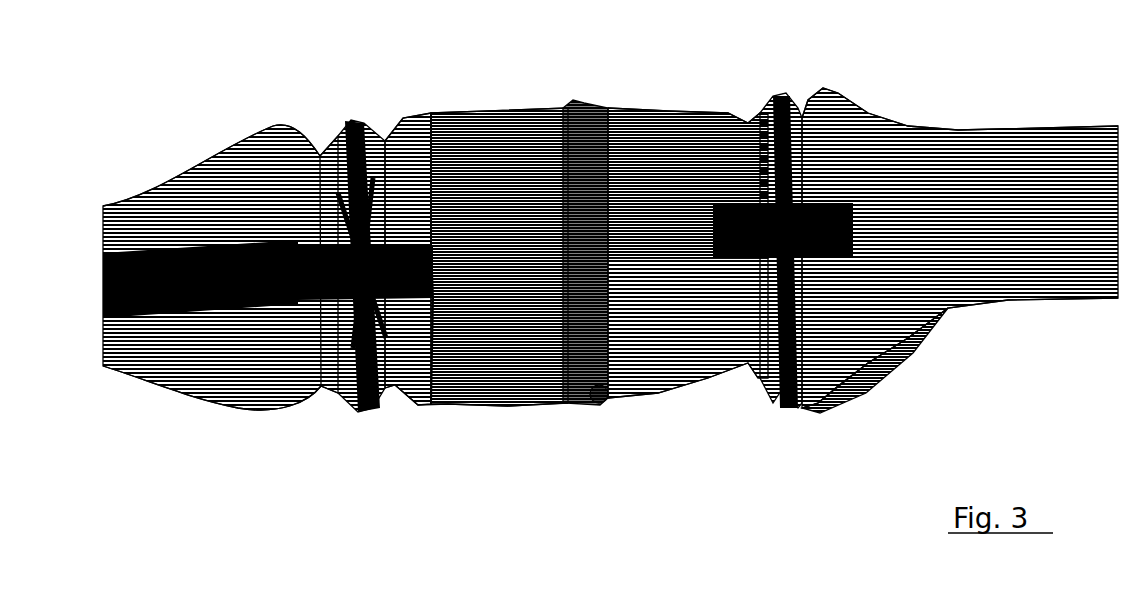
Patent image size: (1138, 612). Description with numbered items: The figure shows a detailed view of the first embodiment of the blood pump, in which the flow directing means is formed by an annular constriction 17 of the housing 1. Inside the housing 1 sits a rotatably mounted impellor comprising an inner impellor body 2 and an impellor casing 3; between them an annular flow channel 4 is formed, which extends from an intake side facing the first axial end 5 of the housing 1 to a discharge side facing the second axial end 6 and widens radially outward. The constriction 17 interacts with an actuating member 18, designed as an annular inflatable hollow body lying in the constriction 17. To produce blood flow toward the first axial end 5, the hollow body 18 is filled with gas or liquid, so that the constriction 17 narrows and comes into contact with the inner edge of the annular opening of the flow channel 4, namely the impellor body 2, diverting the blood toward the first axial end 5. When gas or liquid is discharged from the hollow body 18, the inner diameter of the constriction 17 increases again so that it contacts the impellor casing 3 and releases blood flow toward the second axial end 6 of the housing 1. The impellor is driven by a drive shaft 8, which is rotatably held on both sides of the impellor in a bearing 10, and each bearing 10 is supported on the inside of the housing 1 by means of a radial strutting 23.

The housing 1 is at (472, 103).
The impellor body 2 is at (498, 340).
The impellor casing 3 is at (663, 108).
The annular flow channel 4 is at (660, 330).
The first axial end 5 is at (1035, 115).
The second axial end 6 is at (143, 187).
The drive shaft 8 is at (893, 212).
The bearing 10 is at (848, 355).
The annular constriction 17 is at (613, 380).
The actuating member 18 is at (568, 108).
The radial strutting 23 is at (782, 95).